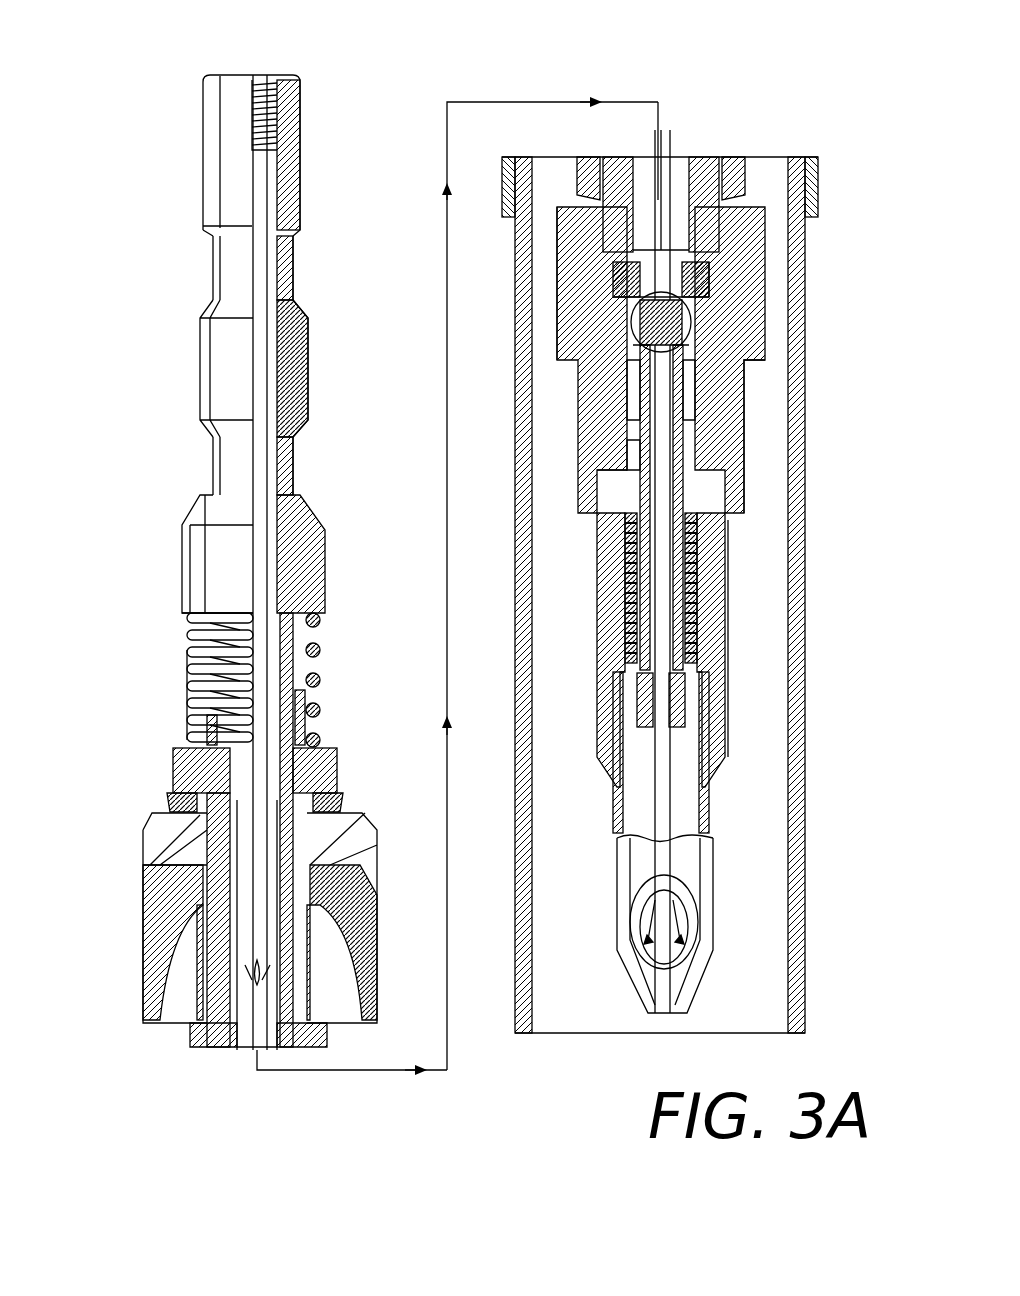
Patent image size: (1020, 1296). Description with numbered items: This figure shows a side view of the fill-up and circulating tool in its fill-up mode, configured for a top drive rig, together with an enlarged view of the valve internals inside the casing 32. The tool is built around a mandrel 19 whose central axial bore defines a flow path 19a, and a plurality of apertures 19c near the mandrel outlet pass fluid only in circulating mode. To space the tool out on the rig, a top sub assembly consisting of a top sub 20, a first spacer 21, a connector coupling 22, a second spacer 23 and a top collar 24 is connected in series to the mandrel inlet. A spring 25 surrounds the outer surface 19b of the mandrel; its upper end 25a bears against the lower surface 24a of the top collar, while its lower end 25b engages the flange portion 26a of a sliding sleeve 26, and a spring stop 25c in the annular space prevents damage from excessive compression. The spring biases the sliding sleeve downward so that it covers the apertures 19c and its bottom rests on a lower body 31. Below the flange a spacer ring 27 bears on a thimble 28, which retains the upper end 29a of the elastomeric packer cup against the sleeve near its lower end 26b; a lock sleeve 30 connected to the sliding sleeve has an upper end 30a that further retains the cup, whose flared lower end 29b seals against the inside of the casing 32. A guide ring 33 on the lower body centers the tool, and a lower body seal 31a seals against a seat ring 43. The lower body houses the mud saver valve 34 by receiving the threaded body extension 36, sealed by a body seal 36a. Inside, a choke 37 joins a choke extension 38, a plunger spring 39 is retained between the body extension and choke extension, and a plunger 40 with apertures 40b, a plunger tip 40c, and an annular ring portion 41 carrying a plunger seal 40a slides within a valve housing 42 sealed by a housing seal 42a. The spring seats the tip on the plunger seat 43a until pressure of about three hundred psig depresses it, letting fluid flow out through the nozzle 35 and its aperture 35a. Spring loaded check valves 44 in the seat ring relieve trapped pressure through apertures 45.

The mandrel 19 is at (330, 770).
The flow path 19a is at (262, 73).
The outer surface 19b is at (190, 660).
The apertures 19c is at (265, 975).
The top sub 20 is at (300, 139).
The first spacer 21 is at (293, 268).
The connector coupling 22 is at (308, 357).
The second spacer 23 is at (293, 465).
The top collar 24 is at (325, 548).
The lower surface 24a is at (190, 618).
The spring 25 is at (195, 672).
The upper end 25a is at (321, 620).
The lower end 25b is at (190, 735).
The spring stop 25c is at (305, 700).
The sliding sleeve 26 is at (337, 755).
The flange portion 26a is at (173, 765).
The lower end 26b is at (200, 838).
The spacer ring 27 is at (167, 800).
The thimble 28 is at (377, 847).
The upper end 29a is at (365, 890).
The lower end 29b is at (185, 1022).
The lock sleeve 30 is at (192, 1030).
The upper end 30a is at (358, 938).
The lower body 31 is at (745, 200).
The lower body seal 31a is at (712, 280).
The casing 32 is at (520, 720).
The guide ring 33 is at (765, 322).
The mud saver valve 34 is at (740, 600).
The nozzle 35 is at (617, 905).
The aperture 35a is at (652, 975).
The body extension 36 is at (730, 635).
The body seal 36a is at (620, 470).
The choke 37 is at (690, 705).
The choke extension 38 is at (625, 635).
The plunger spring 39 is at (628, 565).
The plunger 40 is at (640, 440).
The plunger seal 40a is at (746, 435).
The apertures 40b is at (648, 332).
The plunger tip 40c is at (570, 290).
The annular ring portion 41 is at (630, 395).
The valve housing 42 is at (618, 337).
The housing seal 42a is at (627, 455).
The seat ring 43 is at (502, 190).
The plunger seat 43a is at (598, 187).
The check valves 44 is at (720, 280).
The apertures 45 is at (700, 265).